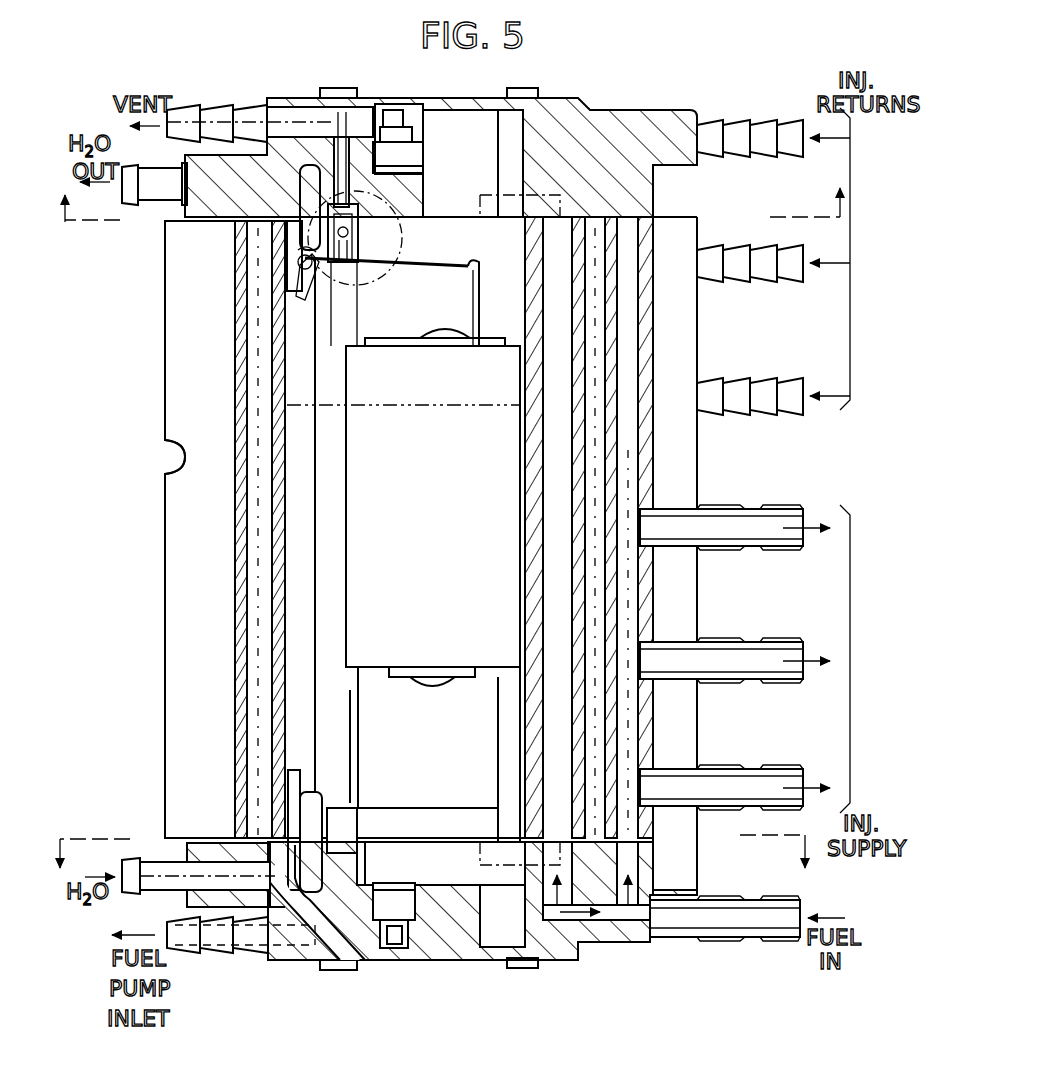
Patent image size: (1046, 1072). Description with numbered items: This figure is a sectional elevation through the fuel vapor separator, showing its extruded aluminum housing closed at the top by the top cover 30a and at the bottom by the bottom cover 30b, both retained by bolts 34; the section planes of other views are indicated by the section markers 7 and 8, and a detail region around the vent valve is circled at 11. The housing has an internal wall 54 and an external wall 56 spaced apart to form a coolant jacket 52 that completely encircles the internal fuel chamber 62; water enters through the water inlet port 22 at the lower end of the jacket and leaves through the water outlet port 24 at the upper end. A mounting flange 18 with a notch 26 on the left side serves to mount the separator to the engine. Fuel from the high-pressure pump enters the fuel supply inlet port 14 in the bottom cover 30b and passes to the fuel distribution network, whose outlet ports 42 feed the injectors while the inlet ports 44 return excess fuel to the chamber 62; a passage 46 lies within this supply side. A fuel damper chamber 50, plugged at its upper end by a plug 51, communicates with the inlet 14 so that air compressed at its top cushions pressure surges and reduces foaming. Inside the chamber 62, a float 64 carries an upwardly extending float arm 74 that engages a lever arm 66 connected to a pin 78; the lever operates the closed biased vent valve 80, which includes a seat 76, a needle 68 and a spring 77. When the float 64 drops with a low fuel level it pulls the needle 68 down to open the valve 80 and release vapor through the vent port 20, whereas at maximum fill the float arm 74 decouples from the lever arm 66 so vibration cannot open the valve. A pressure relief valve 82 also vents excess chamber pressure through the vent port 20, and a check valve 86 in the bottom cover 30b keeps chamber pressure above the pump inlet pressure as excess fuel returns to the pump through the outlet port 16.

The section line 7- 7 is at (437, 837).
The section line 8- 8 is at (454, 218).
The detail circle 11 is at (318, 188).
The fuel supply inlet port 14 is at (762, 928).
The outlet port 16 is at (185, 950).
The mounting flange 18 is at (190, 690).
The vent port 20 is at (178, 100).
The water inlet port 22 is at (135, 885).
The water outlet port 24 is at (128, 200).
The notch 26 is at (168, 455).
The top cover 30a is at (618, 108).
The bottom cover 30b is at (592, 960).
The bolts 34 is at (338, 88).
The outlet ports 42 is at (793, 508).
The inlet ports 44 is at (785, 120).
The supply passage 46 is at (628, 728).
The fuel damper chamber 50 is at (555, 813).
The plug 51 is at (553, 240).
The coolant jacket 52 is at (256, 310).
The internal wall 54 is at (276, 492).
The external wall 56 is at (238, 555).
The chamber 62 is at (470, 700).
The float 64 is at (372, 680).
The lever arm 66 is at (432, 268).
The needle 68 is at (340, 270).
The float arm 74 is at (468, 322).
The seat 76 is at (352, 232).
The spring 77 is at (298, 265).
The pin 78 is at (308, 285).
The closed biased vent valve 80 is at (358, 196).
The pressure relief valve 82 is at (393, 110).
The check valve 86 is at (395, 945).